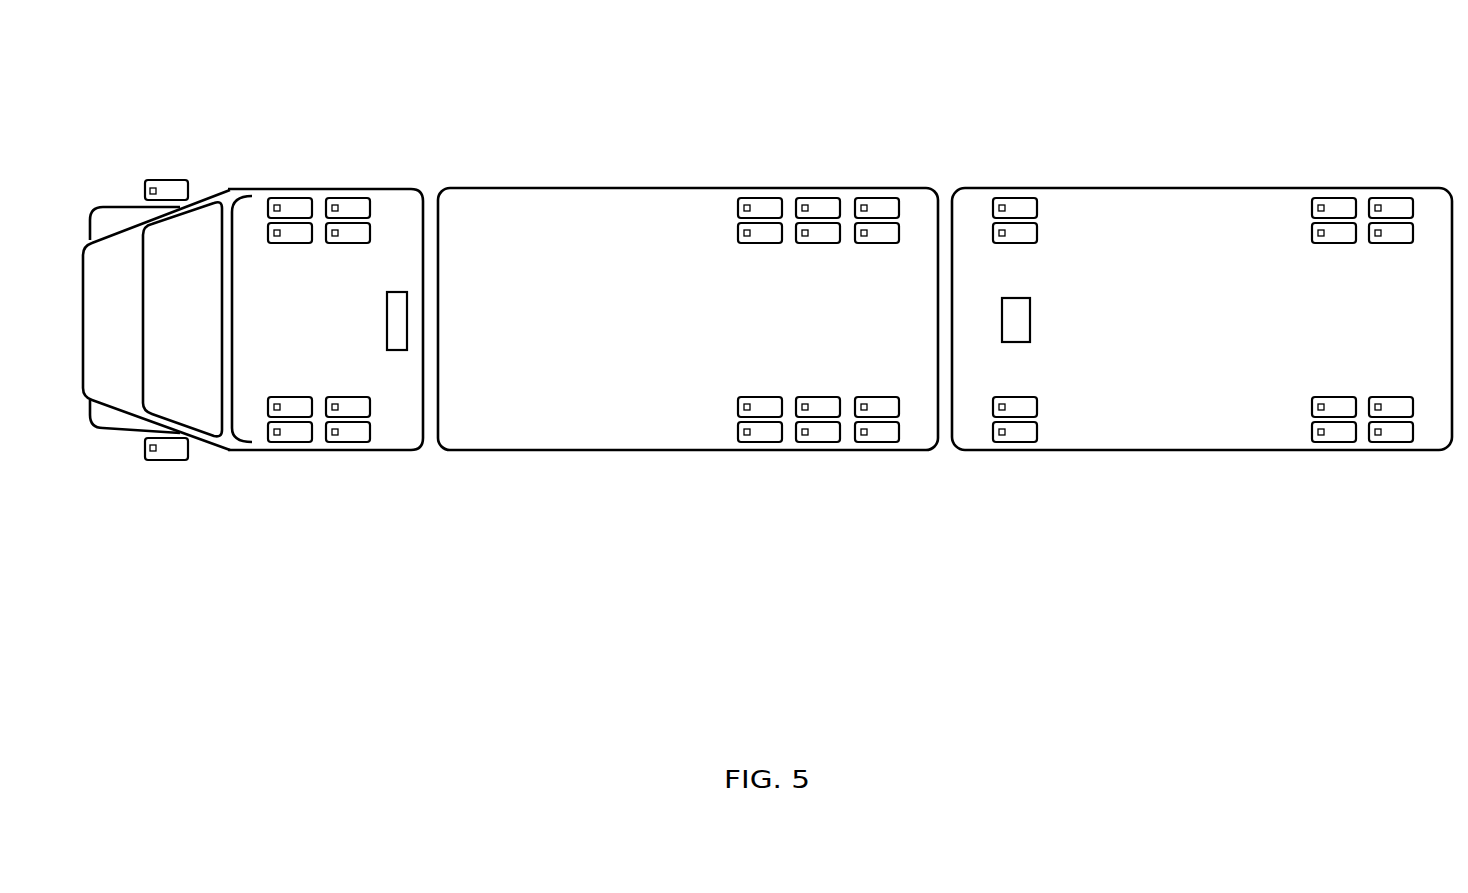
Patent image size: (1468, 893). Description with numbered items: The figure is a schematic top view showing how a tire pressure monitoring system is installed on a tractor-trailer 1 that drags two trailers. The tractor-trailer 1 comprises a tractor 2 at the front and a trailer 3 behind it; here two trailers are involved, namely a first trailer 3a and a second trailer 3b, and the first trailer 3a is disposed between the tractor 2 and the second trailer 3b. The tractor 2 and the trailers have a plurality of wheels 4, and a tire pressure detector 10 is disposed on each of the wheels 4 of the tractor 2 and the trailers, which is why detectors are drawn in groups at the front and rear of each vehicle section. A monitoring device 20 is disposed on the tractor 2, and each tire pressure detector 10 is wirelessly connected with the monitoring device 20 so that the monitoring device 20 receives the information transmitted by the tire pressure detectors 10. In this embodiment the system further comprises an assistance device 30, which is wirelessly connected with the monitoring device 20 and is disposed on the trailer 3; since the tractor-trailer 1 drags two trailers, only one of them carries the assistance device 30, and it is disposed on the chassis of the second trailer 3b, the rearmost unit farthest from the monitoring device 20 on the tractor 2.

The tractor-trailer 1 is at (630, 102).
The tractor 2 is at (398, 200).
The trailer 3 is at (945, 259).
The first trailer 3a is at (915, 200).
The second trailer 3b is at (955, 112).
The wheel 4 is at (185, 187).
The tire pressure detector 10 is at (150, 183).
The monitoring device 20 is at (400, 345).
The assistance device 30 is at (1023, 332).